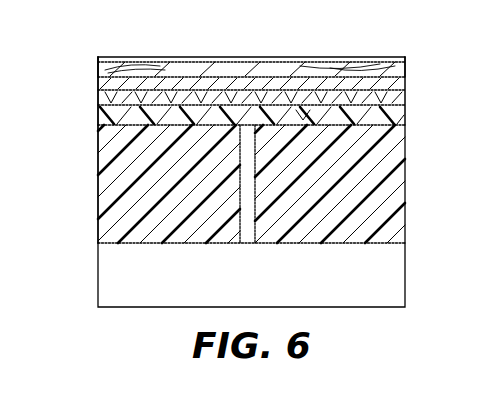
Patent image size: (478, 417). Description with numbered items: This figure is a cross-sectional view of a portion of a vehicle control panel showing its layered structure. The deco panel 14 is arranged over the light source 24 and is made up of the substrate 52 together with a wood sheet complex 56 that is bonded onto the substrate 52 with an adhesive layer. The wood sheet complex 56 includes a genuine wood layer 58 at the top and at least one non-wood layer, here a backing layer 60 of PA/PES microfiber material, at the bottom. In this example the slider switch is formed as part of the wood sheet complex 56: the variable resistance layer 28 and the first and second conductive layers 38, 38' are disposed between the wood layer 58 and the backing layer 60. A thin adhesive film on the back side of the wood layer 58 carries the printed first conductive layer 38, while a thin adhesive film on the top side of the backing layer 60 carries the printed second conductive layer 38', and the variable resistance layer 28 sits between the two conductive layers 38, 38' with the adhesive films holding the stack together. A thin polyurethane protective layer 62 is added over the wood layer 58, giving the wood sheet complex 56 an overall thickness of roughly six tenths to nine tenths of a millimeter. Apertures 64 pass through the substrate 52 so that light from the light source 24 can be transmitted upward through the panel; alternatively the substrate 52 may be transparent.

The deco panel 14 is at (72, 60).
The light source 24 is at (405, 282).
The variable resistance layer 28 is at (98, 92).
The first conductive layer 38 is at (251, 65).
The second conductive layer 38' is at (313, 137).
The substrate 52 is at (405, 225).
The wood sheet complex 56 is at (417, 60).
The wood layer 58 is at (153, 64).
The backing layer 60 is at (400, 118).
The protective layer 62 is at (342, 62).
The apertures 64 is at (245, 237).